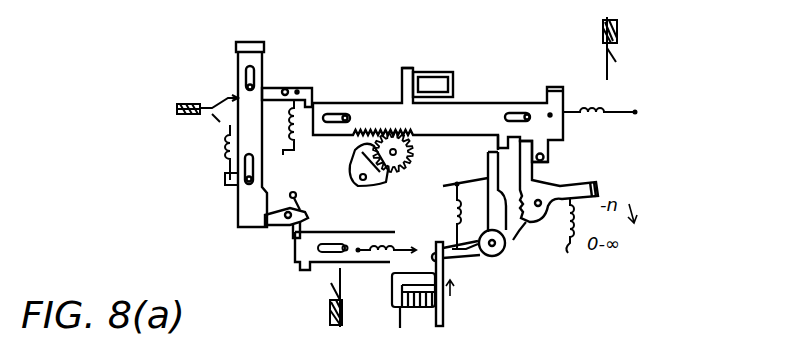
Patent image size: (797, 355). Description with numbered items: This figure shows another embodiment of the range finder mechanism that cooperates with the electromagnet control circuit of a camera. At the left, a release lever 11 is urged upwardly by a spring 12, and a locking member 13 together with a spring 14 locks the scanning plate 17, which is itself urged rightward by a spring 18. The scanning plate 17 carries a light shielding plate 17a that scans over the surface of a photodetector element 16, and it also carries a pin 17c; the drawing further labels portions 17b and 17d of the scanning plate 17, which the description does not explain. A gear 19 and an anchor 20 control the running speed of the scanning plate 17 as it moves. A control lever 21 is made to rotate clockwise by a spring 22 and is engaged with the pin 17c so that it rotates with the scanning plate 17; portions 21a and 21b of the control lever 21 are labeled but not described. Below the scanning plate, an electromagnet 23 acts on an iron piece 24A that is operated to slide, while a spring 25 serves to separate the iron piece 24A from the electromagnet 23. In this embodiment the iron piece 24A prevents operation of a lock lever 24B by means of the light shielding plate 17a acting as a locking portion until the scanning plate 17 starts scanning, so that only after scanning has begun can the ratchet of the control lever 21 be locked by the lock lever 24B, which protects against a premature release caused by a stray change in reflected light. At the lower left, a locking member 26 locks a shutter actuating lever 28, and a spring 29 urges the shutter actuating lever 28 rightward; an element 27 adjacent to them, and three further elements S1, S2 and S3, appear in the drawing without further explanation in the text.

The release lever 11 is at (264, 64).
The spring 12 is at (230, 126).
The locking member 13 is at (299, 88).
The spring 14 is at (296, 145).
The photodetector element 16 is at (428, 72).
The scanning plate 17 is at (467, 102).
The light shielding plate 17a is at (400, 88).
The upright tab of slide plate 17b is at (577, 66).
The pin 17c is at (550, 150).
The projection of slide plate 17d is at (490, 158).
The spring 18 is at (616, 112).
The gear 19 is at (371, 150).
The anchor 20 is at (367, 186).
The control lever 21 is at (560, 190).
The lower arm of lever 21 21a is at (534, 246).
The arm tip of lever 21 21b is at (600, 189).
The spring 22 is at (568, 253).
The electromagnet 23 is at (393, 295).
The iron piece 24A is at (445, 313).
The lock lever 24B is at (455, 204).
The spring 25 is at (455, 247).
The locking member 26 is at (290, 228).
The pin 27 is at (300, 196).
The shutter actuating lever 28 is at (343, 212).
The spring 29 is at (365, 245).
The switch S1 is at (207, 101).
The switch S2 is at (623, 48).
The switch S3 is at (321, 301).